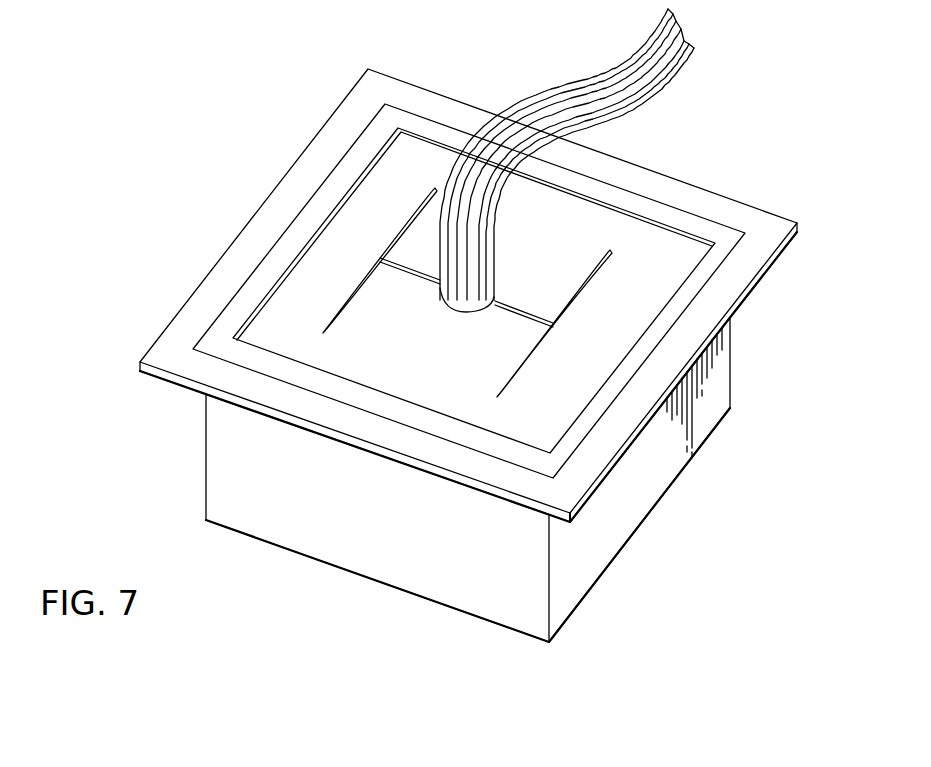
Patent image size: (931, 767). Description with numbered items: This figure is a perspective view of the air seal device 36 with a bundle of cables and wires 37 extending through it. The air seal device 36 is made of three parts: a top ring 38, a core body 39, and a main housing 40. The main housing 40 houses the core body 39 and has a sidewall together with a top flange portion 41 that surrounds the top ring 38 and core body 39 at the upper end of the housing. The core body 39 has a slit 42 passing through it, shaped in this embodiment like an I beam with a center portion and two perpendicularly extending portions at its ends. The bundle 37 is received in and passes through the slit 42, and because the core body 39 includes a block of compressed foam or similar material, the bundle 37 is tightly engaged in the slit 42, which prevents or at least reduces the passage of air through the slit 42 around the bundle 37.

The air seal device 36 is at (745, 112).
The bundle of cables and wires 37 is at (618, 62).
The top ring 38 is at (744, 222).
The core body 39 is at (410, 163).
The main housing 40 is at (750, 380).
The top flange portion 41 is at (725, 295).
The slit 42 is at (592, 262).